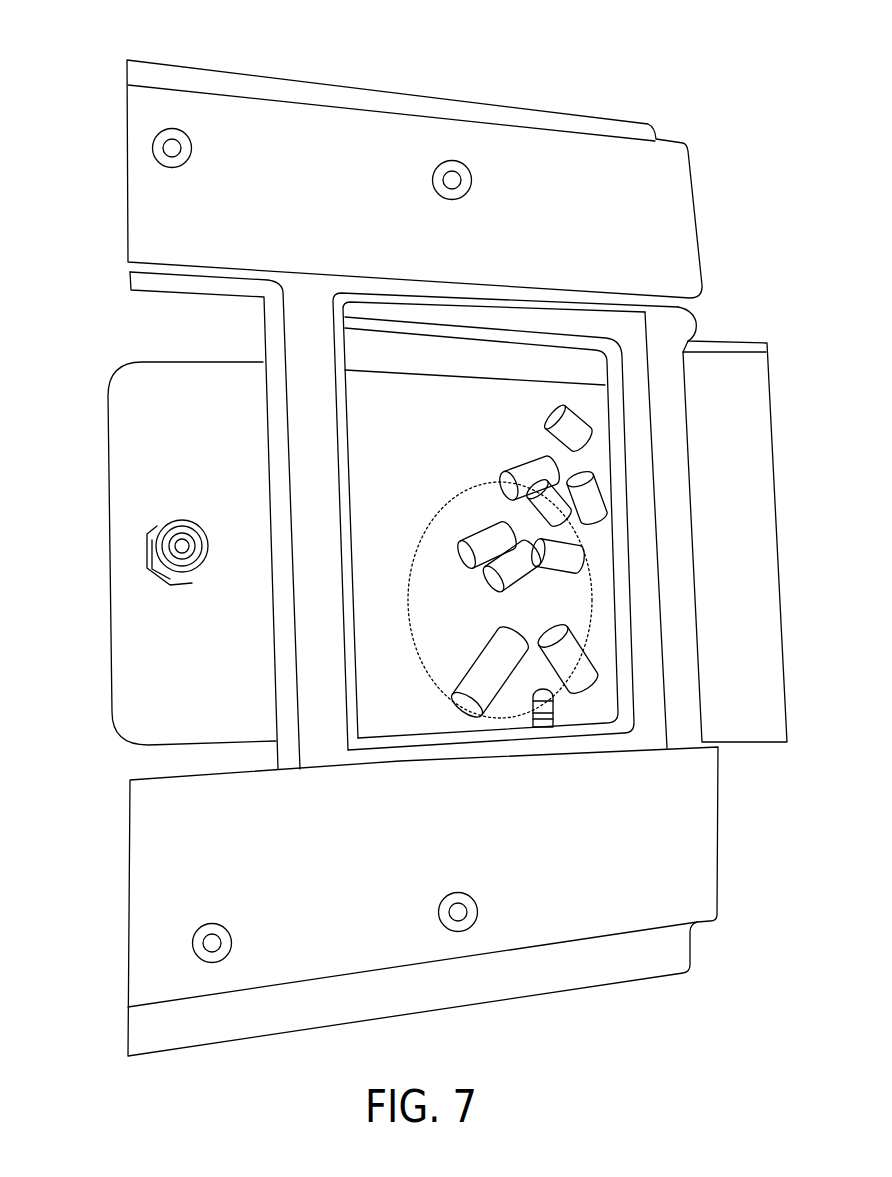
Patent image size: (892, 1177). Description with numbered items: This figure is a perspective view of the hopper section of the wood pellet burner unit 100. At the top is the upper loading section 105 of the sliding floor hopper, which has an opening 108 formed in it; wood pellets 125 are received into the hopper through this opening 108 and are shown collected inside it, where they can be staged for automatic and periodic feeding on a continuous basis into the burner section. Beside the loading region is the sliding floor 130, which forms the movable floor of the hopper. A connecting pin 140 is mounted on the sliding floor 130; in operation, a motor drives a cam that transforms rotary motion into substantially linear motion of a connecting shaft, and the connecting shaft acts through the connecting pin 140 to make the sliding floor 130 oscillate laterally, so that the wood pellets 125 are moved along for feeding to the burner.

The wood pellet burner unit 100 is at (754, 80).
The upper loading section 105 is at (349, 118).
The opening 108 is at (500, 354).
The wood pellets 125 is at (468, 487).
The sliding floor 130 is at (146, 386).
The connecting pin 140 is at (150, 539).